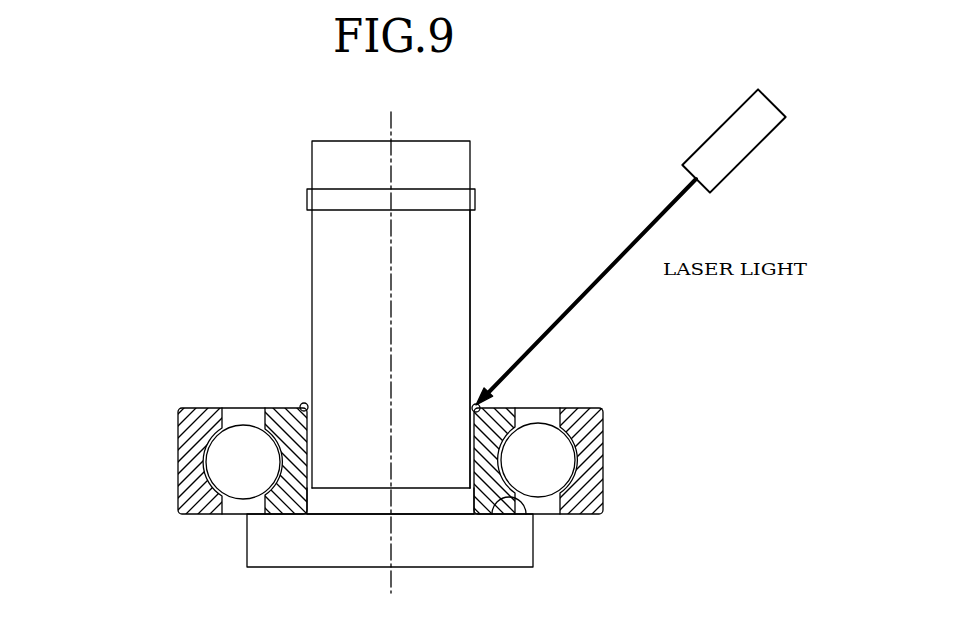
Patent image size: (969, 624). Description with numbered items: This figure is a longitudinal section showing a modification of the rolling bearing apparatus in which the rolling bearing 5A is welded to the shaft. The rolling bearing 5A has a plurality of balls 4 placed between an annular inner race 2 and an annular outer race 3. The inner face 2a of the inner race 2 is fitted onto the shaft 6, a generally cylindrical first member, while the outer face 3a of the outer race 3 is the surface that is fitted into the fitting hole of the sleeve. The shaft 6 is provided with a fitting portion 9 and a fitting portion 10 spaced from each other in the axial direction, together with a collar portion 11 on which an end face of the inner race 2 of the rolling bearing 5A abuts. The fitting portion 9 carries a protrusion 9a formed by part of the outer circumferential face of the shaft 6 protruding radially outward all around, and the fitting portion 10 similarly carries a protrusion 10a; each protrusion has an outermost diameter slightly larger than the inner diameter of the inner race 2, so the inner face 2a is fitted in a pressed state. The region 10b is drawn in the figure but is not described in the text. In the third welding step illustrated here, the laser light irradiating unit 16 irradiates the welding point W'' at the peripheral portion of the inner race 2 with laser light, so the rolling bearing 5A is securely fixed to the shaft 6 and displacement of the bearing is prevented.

The inner race 2 is at (283, 410).
The inner face of inner race 2a is at (470, 420).
The outer race 3 is at (588, 408).
The outer face of outer race 3a is at (603, 436).
The balls 4 is at (542, 408).
The rolling bearing 5A is at (158, 466).
The shaft 6 is at (565, 169).
The fitting portion 9 is at (329, 460).
The protrusion 9a is at (428, 500).
The fitting portion 10 is at (253, 229).
The protrusion 10a is at (307, 198).
The cylindrical portion 10b is at (477, 231).
The collar portion 11 is at (533, 516).
The laser light irradiating unit 16 is at (721, 116).
The welding point W'' is at (392, 372).